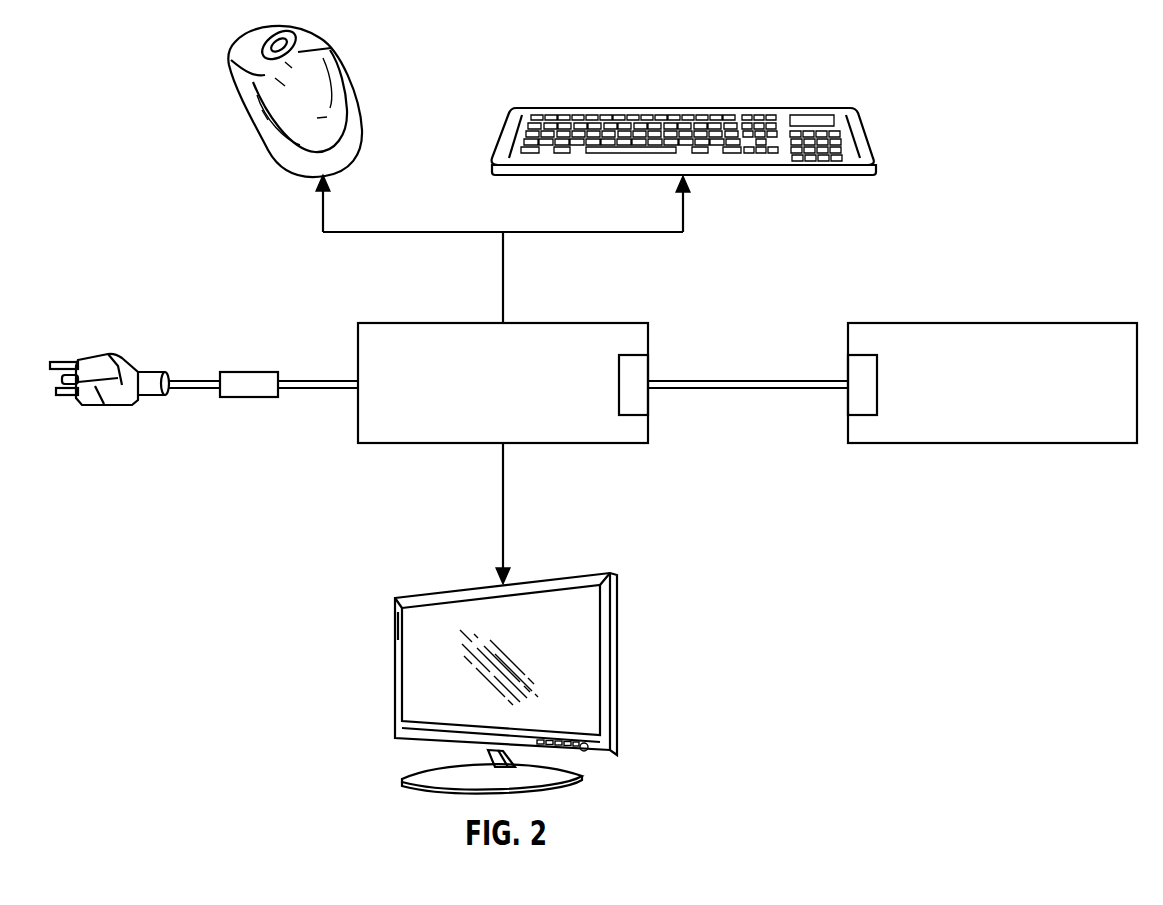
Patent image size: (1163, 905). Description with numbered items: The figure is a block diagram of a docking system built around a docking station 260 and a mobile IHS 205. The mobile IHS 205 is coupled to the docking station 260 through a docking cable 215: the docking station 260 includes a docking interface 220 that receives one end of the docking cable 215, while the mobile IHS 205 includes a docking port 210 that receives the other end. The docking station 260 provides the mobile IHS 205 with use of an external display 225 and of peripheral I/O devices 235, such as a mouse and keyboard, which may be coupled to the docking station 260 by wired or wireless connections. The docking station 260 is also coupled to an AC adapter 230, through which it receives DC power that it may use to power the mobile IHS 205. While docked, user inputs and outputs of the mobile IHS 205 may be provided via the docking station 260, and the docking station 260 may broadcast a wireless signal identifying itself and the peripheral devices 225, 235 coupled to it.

The mobile IHS 205 is at (918, 322).
The docking port 210 is at (862, 415).
The docking cable 215 is at (747, 379).
The docking interface 220 is at (633, 415).
The external display 225 is at (430, 592).
The AC adapter 230 is at (250, 371).
The peripheral I/O devices 235 is at (427, 104).
The docking station 260 is at (430, 322).